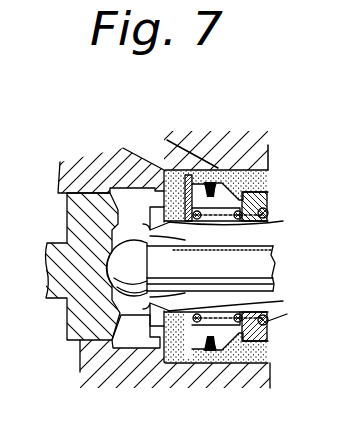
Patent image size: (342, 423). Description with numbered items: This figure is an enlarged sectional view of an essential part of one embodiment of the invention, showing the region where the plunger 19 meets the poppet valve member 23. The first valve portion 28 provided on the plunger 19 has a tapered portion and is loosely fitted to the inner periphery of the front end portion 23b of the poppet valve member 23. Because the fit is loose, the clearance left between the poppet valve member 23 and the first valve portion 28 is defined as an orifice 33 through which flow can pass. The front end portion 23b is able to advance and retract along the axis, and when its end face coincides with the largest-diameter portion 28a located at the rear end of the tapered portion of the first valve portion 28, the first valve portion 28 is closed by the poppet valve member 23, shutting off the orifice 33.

The plunger 19 is at (63, 272).
The poppet valve member 23 is at (211, 182).
The front end portion 23b is at (180, 178).
The first valve portion 28 is at (275, 247).
The largest-diameter portion 28a is at (167, 302).
The orifice 33 is at (167, 231).